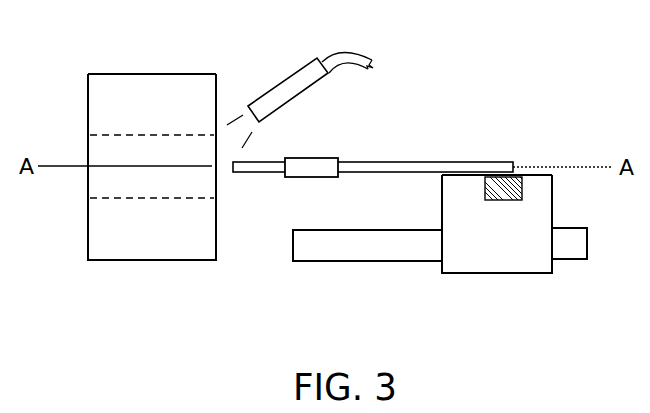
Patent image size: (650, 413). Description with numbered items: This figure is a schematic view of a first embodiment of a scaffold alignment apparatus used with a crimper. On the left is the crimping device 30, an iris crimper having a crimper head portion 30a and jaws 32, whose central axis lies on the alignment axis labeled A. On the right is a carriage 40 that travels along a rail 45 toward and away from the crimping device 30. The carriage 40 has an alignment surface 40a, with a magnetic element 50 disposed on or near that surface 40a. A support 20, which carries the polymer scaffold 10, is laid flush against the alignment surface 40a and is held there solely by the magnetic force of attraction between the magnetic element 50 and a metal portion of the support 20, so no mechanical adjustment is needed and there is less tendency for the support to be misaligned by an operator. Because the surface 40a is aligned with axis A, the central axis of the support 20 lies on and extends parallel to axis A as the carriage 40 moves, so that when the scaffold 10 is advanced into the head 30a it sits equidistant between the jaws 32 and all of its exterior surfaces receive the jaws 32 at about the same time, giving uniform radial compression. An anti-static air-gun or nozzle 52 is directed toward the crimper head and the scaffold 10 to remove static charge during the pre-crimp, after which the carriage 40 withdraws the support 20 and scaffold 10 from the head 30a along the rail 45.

The crimping device 30 is at (150, 130).
The crimper head portion 30a is at (130, 66).
The jaws 32 is at (110, 137).
The anti-static air-gun or nozzle 52 is at (282, 80).
The scaffold 10 is at (291, 170).
The support 20 is at (368, 162).
The carriage 40 is at (514, 234).
The alignment surface 40a is at (452, 173).
The magnetic element 50 is at (517, 175).
The rail 45 is at (316, 254).